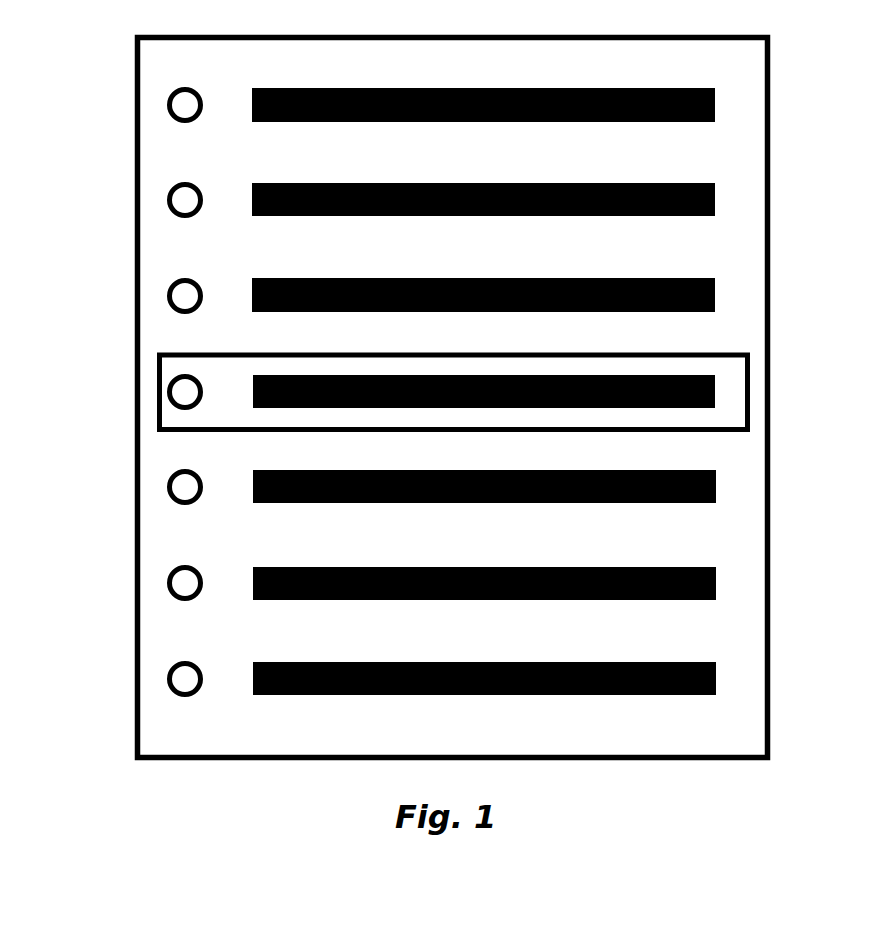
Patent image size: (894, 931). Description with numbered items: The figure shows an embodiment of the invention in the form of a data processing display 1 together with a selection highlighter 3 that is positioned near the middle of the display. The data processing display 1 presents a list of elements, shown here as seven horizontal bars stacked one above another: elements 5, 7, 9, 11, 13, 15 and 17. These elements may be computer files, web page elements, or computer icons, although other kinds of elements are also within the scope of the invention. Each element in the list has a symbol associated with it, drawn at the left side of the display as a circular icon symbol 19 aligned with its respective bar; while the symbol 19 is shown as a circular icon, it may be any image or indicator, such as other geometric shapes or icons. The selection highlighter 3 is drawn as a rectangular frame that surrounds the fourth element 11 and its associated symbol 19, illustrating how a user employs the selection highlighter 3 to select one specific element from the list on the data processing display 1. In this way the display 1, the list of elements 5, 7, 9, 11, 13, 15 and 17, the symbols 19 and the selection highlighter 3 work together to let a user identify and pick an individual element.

The data processing display 1 is at (733, 258).
The selection highlighter 3 is at (748, 373).
The element 5 is at (715, 99).
The element 7 is at (715, 194).
The element 9 is at (715, 301).
The element 11 is at (715, 385).
The element 13 is at (716, 480).
The element 15 is at (716, 578).
The element 17 is at (716, 673).
The circular icon symbol 19 is at (182, 397).